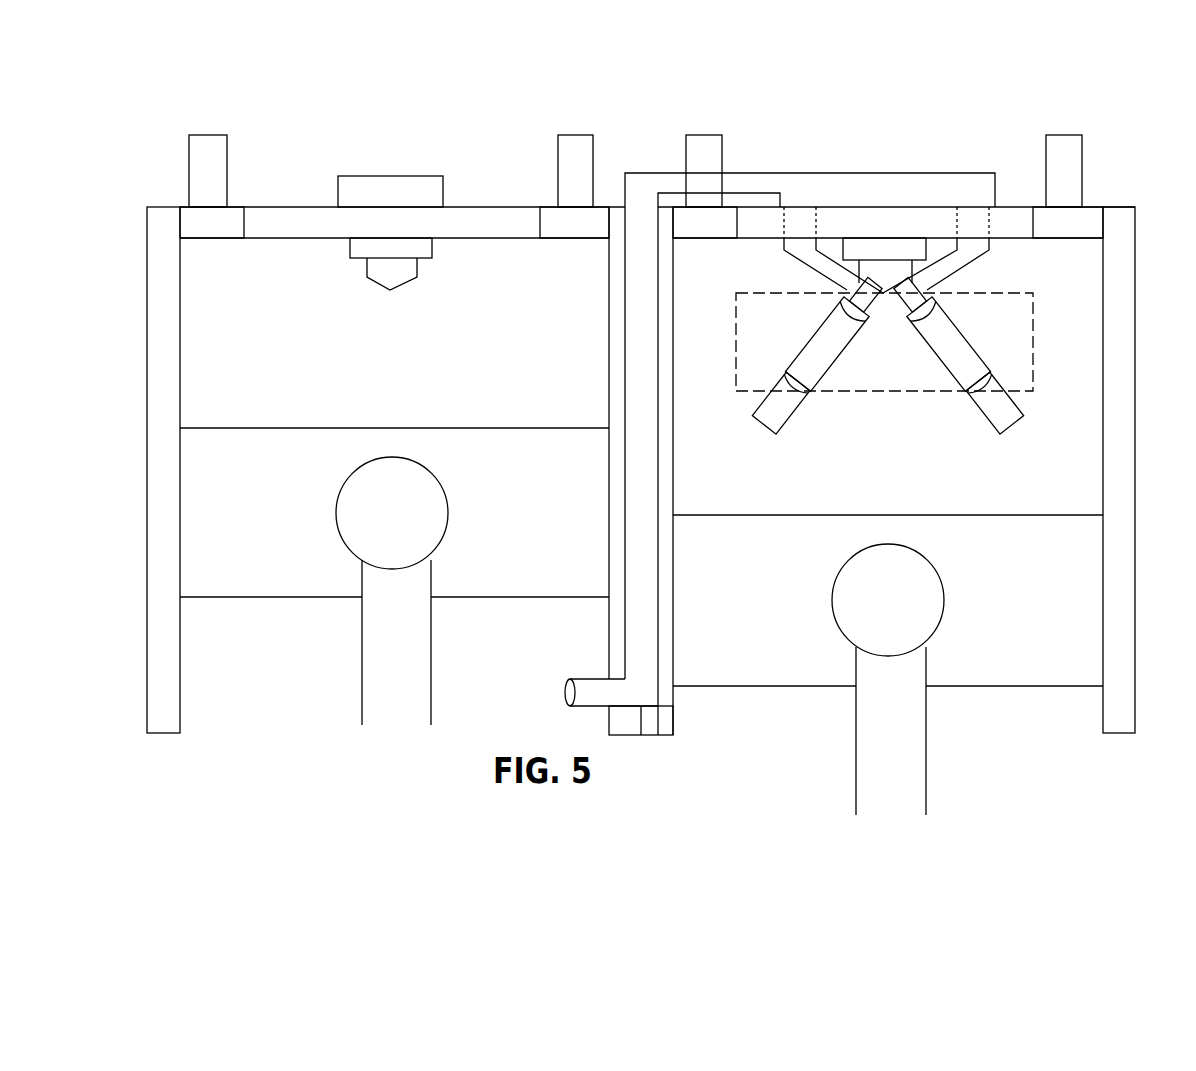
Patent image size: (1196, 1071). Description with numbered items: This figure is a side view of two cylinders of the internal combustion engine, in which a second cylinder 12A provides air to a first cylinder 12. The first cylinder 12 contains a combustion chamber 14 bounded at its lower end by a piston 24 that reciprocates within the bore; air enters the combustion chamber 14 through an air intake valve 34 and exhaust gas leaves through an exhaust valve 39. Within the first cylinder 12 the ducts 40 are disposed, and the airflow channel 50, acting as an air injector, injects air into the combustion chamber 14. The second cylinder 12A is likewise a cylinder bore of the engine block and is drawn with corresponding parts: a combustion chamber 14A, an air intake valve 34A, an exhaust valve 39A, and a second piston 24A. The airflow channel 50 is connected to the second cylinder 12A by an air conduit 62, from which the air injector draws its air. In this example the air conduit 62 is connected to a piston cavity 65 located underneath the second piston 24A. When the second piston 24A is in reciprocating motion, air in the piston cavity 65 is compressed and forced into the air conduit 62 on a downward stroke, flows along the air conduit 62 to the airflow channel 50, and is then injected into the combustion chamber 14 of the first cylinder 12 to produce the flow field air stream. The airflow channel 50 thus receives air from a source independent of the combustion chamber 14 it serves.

The second cylinder 12A is at (302, 145).
The cylinder 12 is at (796, 162).
The air conduit 62 is at (657, 187).
The airflow channel 50 is at (972, 250).
The exhaust valve 39 is at (1070, 207).
The air intake valve 34A is at (210, 220).
The exhaust valve 39A is at (562, 229).
The air intake valve 34 is at (703, 220).
The ducts 40 is at (737, 338).
The combustion chamber 14A is at (512, 417).
The combustion chamber 14 is at (1057, 473).
The second piston 24A is at (504, 543).
The piston 24 is at (1050, 625).
The piston cavity 65 is at (487, 684).